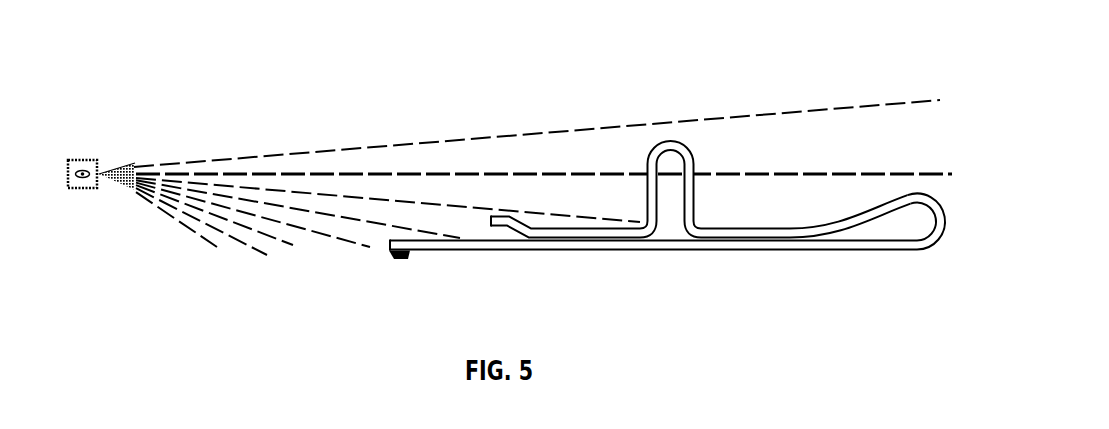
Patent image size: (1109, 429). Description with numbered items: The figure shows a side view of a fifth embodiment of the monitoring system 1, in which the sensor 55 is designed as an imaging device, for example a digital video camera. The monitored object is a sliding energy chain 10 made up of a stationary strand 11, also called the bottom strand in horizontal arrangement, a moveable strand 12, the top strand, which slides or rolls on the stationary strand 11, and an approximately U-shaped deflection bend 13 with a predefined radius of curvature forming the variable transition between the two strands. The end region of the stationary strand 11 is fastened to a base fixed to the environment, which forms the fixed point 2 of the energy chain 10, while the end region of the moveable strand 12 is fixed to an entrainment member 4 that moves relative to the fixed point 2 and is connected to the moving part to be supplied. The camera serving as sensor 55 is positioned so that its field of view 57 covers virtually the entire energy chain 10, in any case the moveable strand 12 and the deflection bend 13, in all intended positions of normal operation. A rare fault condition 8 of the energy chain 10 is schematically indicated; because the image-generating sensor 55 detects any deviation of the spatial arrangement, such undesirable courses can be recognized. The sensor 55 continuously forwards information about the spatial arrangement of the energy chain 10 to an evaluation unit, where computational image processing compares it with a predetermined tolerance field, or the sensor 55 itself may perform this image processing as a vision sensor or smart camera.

The monitoring system 1 is at (543, 151).
The fixed point 2 is at (396, 259).
The entrainment member 4 is at (535, 186).
The fault condition 8 is at (676, 133).
The energy chain 10 is at (457, 250).
The stationary strand 11 is at (650, 250).
The moveable strand 12 is at (776, 216).
The deflection bend 13 is at (945, 253).
The sensor 55 is at (86, 150).
The field of view 57 is at (399, 133).